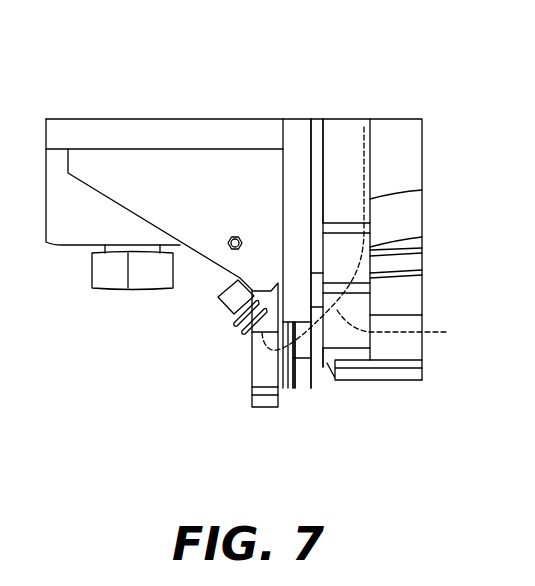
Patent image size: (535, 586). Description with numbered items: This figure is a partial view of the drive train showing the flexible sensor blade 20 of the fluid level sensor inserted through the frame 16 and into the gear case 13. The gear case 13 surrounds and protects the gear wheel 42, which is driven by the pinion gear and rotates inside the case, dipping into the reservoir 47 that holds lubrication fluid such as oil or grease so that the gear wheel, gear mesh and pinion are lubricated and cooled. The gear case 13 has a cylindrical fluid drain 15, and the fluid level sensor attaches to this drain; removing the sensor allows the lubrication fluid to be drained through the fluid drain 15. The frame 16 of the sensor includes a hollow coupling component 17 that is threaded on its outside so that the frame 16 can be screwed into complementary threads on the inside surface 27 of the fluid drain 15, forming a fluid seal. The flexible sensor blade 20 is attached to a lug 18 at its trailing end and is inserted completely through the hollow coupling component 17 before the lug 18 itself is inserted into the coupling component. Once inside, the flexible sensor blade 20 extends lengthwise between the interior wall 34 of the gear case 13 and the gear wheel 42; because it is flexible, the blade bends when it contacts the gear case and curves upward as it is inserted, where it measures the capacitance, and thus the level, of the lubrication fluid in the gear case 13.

The gear case 13 is at (422, 150).
The interior wall 34 is at (326, 160).
The gear wheel 42 is at (400, 264).
The flexible sensor blade 20 is at (368, 238).
The reservoir 47 is at (410, 352).
The lug 18 is at (230, 307).
The frame 16 is at (262, 370).
The fluid drain 15 is at (307, 358).
The hollow coupling component 17 is at (293, 377).
The inside surface 27 is at (307, 363).